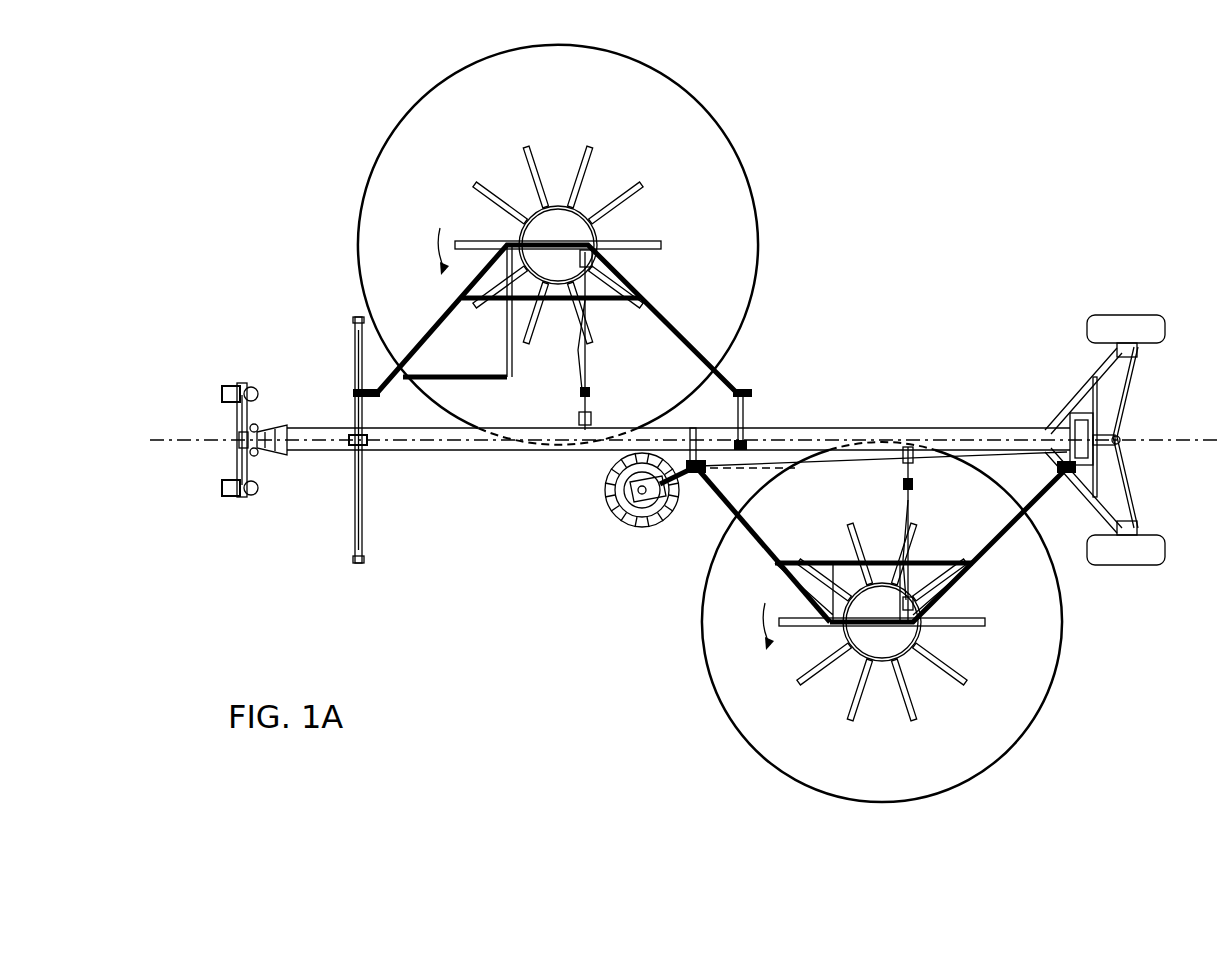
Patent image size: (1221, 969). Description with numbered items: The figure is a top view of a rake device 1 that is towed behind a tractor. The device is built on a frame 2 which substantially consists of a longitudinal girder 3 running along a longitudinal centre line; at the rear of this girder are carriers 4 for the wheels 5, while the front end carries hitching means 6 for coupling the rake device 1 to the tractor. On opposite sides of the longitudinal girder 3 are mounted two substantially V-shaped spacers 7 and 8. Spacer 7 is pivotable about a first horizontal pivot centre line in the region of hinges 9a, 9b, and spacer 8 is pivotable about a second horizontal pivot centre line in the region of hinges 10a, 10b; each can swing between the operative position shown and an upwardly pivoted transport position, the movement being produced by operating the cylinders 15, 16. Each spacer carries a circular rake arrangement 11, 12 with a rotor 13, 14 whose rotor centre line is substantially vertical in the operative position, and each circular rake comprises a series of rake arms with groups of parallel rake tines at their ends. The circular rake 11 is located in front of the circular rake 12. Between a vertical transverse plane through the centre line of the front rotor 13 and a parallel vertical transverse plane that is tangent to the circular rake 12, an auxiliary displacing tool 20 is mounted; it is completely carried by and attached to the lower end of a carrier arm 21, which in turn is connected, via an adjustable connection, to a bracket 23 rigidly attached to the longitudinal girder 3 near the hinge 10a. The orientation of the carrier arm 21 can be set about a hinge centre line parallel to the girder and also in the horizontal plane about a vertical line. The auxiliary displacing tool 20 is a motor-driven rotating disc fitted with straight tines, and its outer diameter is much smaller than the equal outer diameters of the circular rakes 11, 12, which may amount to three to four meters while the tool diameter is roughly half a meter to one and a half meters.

The rake device 1 is at (1013, 249).
The frame 2 is at (447, 442).
The longitudinal girder 3 is at (540, 442).
The carriers 4 is at (1093, 370).
The wheels 5 is at (1152, 328).
The hitching means 6 is at (232, 452).
The spacer 7 is at (693, 330).
The spacer 8 is at (1067, 475).
The hinge 9a is at (357, 393).
The hinge 9b is at (752, 392).
The hinge 10a is at (703, 468).
The hinge 10b is at (1062, 458).
The circular rake arrangement 11 is at (436, 140).
The circular rake arrangement 12 is at (1005, 738).
The rotor 13 is at (572, 237).
The rotor 14 is at (896, 656).
The cylinder 15 is at (585, 350).
The cylinder 16 is at (908, 500).
The auxiliary displacing tool 20 is at (570, 546).
The carrier arm 21 is at (705, 470).
The bracket 23 is at (613, 455).